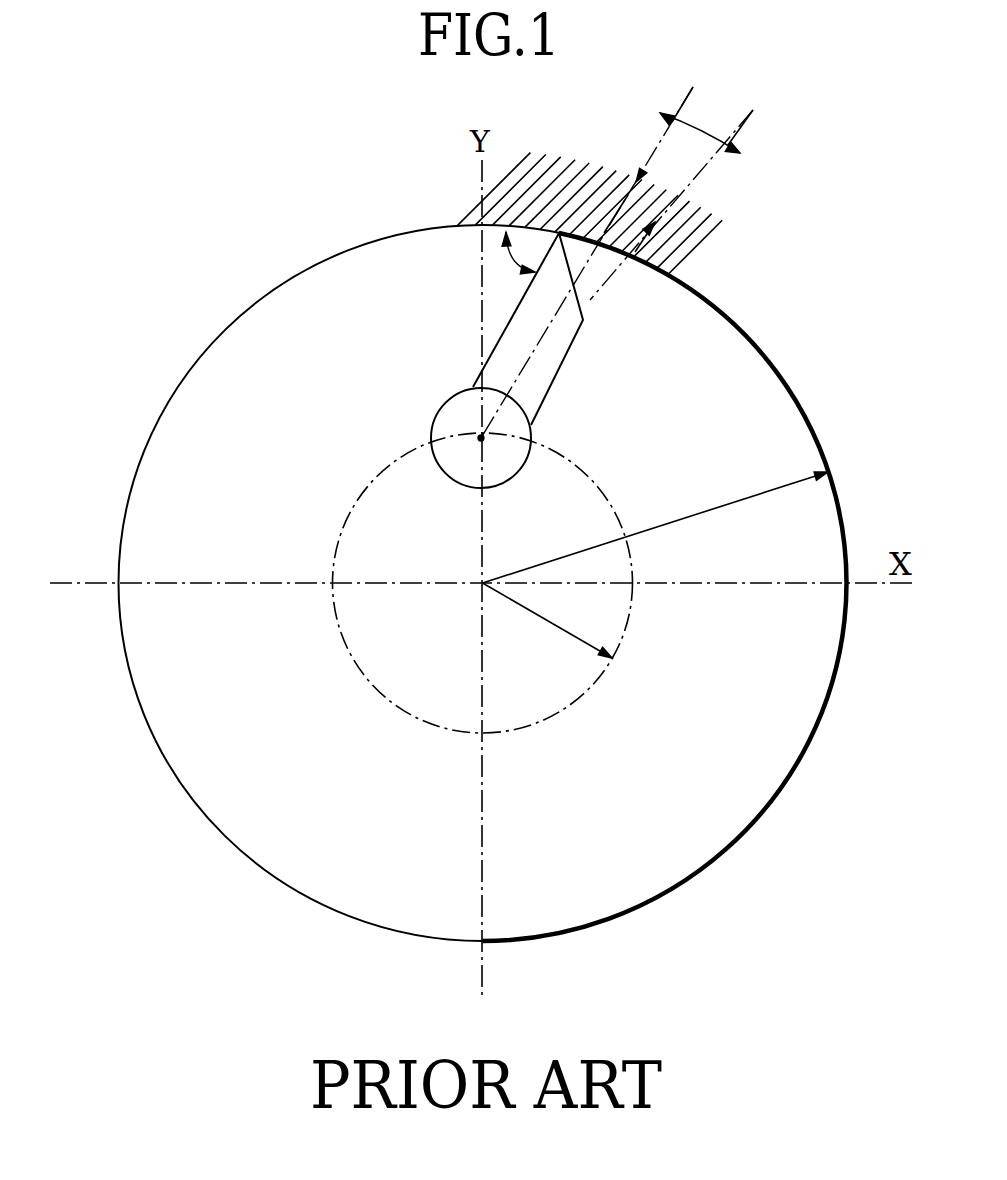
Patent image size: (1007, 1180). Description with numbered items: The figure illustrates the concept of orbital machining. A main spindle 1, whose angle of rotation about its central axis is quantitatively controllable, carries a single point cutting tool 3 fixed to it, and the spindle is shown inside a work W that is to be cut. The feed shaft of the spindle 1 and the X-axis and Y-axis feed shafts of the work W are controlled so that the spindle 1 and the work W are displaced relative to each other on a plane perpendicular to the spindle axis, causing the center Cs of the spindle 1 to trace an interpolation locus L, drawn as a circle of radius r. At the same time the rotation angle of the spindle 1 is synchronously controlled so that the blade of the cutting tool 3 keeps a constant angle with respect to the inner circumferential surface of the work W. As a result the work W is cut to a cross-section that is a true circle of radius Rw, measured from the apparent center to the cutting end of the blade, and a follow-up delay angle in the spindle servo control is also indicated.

The main spindle 1 is at (445, 473).
The cutting tool 3 is at (563, 360).
The work W is at (683, 248).
The center of the spindle Cs is at (481, 437).
The interpolation locus L is at (617, 512).
The radius of the true circle Rw is at (656, 522).
The radius of the locus of the spindle center r is at (548, 620).